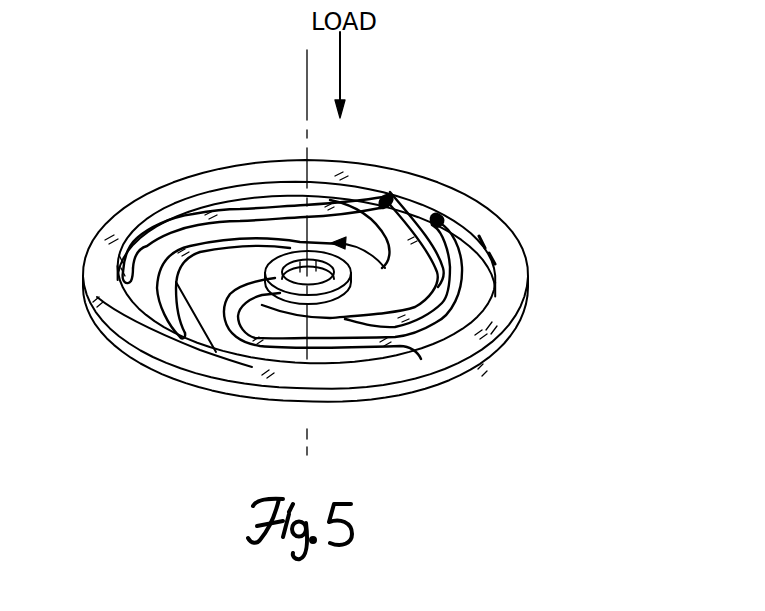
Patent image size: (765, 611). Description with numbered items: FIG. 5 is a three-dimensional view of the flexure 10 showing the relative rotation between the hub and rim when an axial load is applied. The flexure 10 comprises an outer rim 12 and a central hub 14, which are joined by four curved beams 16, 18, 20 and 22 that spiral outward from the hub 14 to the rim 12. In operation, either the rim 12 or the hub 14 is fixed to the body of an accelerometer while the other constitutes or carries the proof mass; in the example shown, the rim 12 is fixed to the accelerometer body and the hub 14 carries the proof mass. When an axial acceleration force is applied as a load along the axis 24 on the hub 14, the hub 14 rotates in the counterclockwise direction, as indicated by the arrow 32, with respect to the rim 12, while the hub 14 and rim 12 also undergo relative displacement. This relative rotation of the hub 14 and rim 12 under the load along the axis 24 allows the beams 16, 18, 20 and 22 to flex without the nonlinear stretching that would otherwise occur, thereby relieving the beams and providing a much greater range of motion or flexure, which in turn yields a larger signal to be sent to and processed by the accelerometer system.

The disc assembly 10 is at (442, 112).
The rim 12 is at (505, 208).
The hub 14 is at (265, 262).
The beam 16 is at (203, 212).
The beam 18 is at (417, 218).
The beam 20 is at (345, 345).
The beam 22 is at (165, 280).
The axis 24 is at (307, 82).
The arrow 32 is at (372, 300).